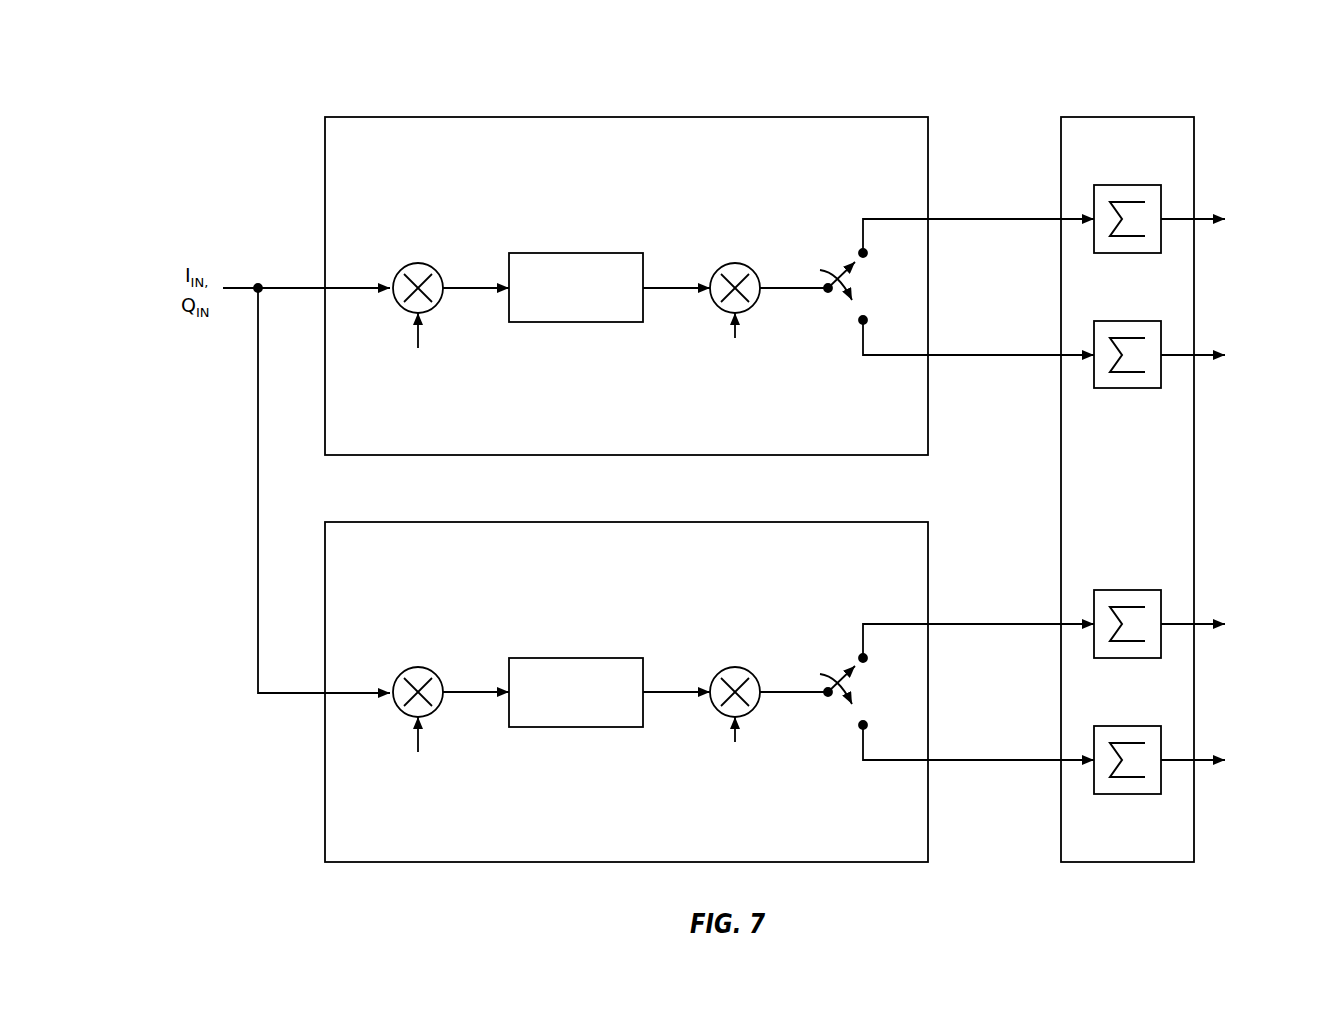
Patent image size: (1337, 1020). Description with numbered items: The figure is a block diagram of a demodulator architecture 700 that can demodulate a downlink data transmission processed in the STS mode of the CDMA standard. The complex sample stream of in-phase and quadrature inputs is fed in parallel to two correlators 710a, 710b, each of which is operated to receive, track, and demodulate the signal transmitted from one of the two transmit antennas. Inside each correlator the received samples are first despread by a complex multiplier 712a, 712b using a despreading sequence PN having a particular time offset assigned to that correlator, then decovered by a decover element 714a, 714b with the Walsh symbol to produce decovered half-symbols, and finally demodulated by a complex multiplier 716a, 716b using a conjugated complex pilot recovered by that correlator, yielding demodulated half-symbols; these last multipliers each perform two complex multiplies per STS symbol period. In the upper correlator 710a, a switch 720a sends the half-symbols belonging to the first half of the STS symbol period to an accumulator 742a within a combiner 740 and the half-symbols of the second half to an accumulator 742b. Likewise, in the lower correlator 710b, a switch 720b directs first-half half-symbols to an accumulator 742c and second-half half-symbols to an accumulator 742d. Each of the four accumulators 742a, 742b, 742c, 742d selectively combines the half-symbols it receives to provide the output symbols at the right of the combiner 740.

The demodulator architecture 700 is at (1284, 78).
The correlator 710a is at (633, 103).
The correlator 710b is at (631, 508).
The complex multiplier 712a is at (424, 251).
The complex multiplier 712b is at (424, 655).
The decover element 714a is at (583, 239).
The decover element 714b is at (583, 645).
The complex multiplier 716a is at (732, 263).
The complex multiplier 716b is at (731, 667).
The switch 720a is at (840, 276).
The switch 720b is at (840, 681).
The combiner 740 is at (1122, 117).
The accumulator 742a is at (1121, 185).
The accumulator 742b is at (1121, 321).
The accumulator 742c is at (1133, 576).
The accumulator 742d is at (1133, 712).